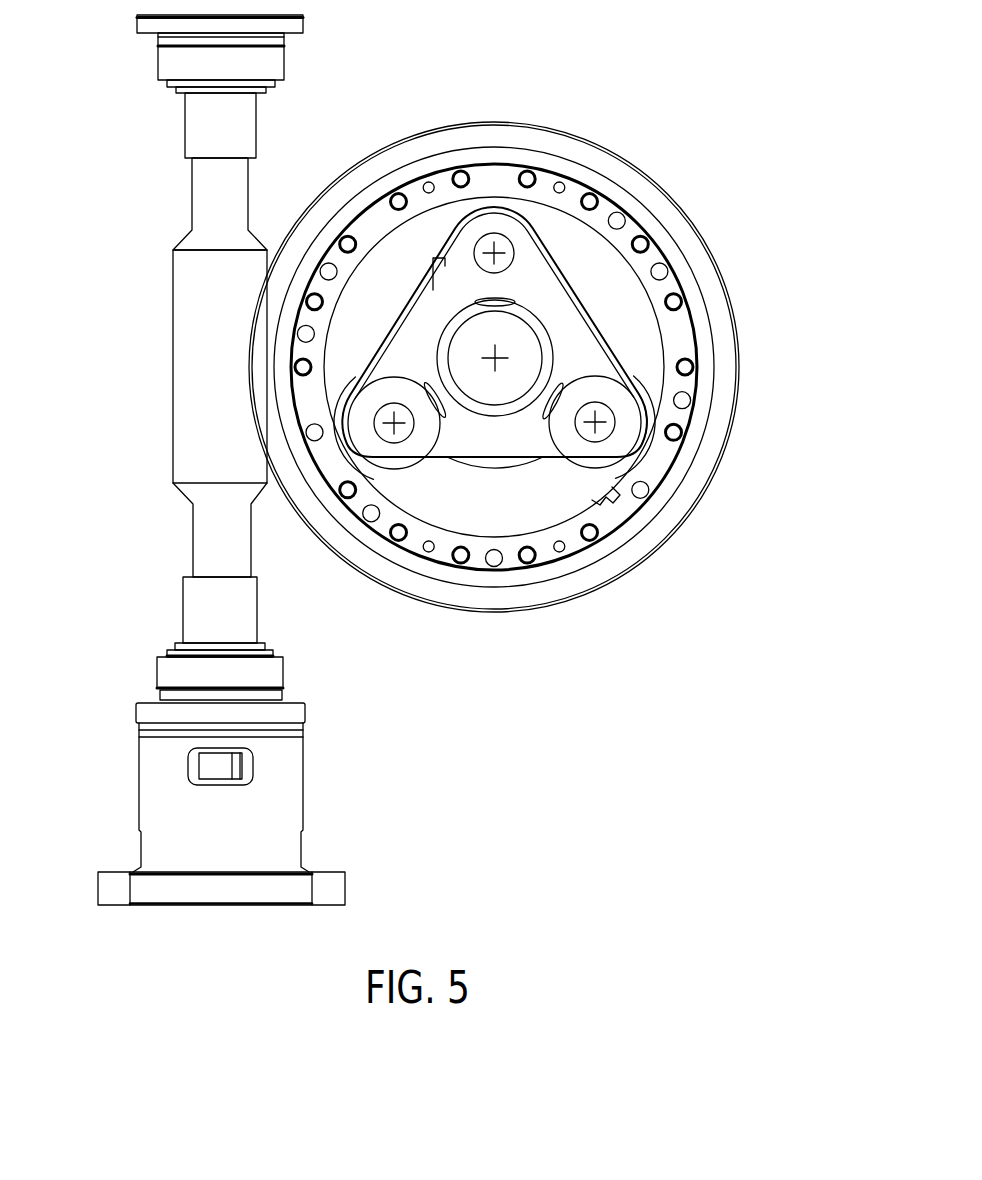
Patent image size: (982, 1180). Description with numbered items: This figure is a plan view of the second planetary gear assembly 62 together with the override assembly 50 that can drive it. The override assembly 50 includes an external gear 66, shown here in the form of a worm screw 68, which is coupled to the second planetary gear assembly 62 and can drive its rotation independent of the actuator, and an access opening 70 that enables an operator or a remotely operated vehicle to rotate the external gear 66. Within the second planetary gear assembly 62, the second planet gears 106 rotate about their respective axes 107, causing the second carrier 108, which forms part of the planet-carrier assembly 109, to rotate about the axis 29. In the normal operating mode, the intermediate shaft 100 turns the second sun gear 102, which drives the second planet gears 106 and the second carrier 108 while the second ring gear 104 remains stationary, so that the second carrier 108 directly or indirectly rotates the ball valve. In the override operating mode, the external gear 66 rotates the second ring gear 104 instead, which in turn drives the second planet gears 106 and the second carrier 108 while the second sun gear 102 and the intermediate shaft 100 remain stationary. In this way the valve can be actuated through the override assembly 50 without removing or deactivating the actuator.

The override assembly 50 is at (126, 414).
The worm screw 68 is at (198, 336).
The external gear 66 is at (198, 455).
The access opening 70 is at (200, 926).
The second planetary gear assembly 62 is at (756, 360).
The planet-carrier assembly 109 is at (396, 279).
The second planet gears 106 is at (540, 240).
The second ring gear 104 is at (632, 232).
The second carrier 108 is at (625, 417).
The axes 107 is at (497, 258).
The intermediate shaft 100 is at (527, 323).
The second sun gear 102 is at (514, 402).
The axis 29 is at (490, 354).